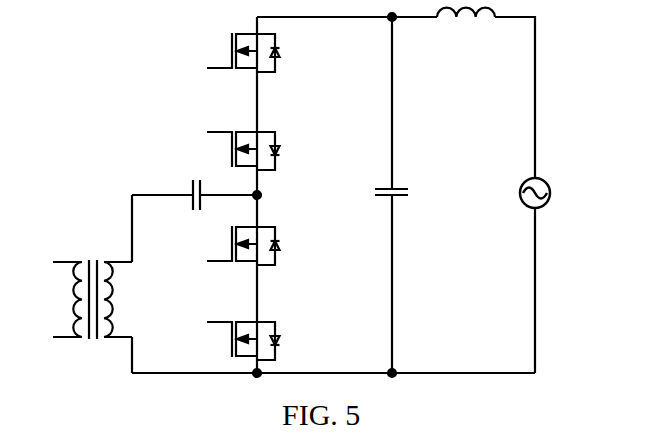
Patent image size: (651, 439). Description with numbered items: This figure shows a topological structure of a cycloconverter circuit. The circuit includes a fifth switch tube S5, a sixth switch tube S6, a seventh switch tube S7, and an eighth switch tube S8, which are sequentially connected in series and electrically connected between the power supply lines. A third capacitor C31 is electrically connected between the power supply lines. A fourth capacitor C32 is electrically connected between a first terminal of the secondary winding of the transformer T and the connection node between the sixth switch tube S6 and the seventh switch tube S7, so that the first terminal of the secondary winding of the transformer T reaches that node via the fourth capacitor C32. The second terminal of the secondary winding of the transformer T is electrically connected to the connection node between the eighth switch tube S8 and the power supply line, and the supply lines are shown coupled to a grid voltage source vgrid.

The fifth switch tube S5 is at (238, 52).
The sixth switch tube S6 is at (238, 150).
The seventh switch tube S7 is at (238, 245).
The eighth switch tube S8 is at (238, 340).
The third capacitor C31 is at (401, 195).
The fourth capacitor C32 is at (194, 190).
The transformer T is at (92, 285).
The grid voltage source v_grid vgrid is at (554, 190).